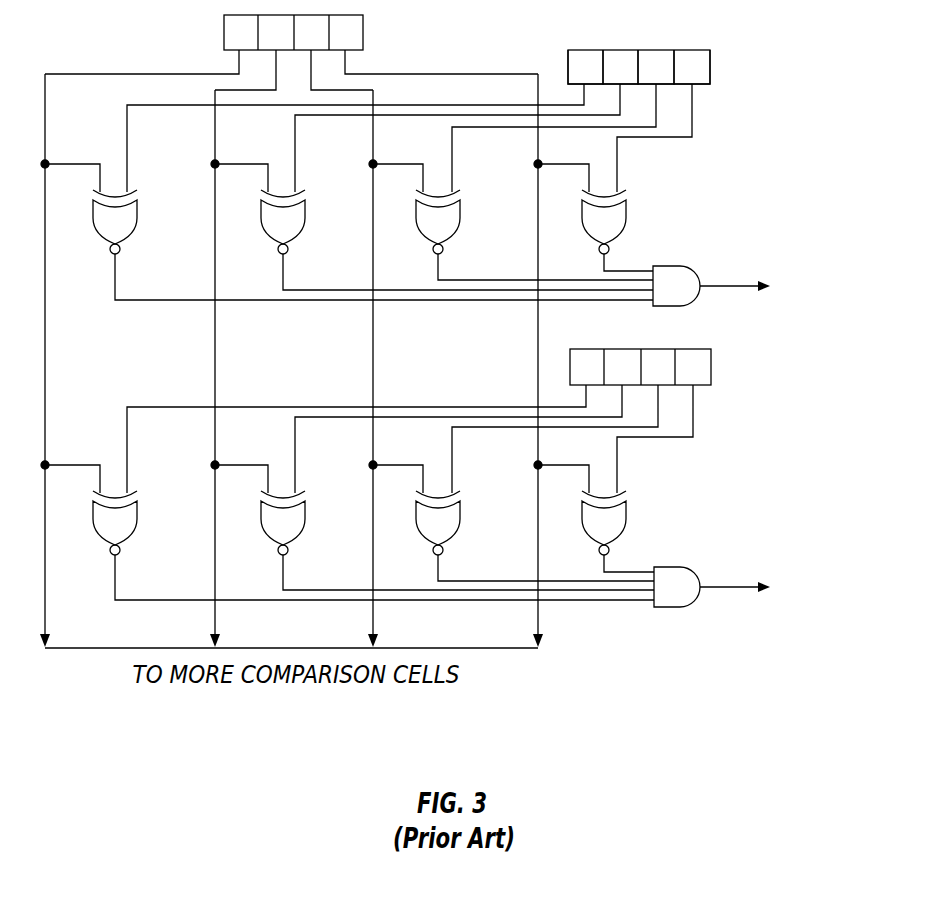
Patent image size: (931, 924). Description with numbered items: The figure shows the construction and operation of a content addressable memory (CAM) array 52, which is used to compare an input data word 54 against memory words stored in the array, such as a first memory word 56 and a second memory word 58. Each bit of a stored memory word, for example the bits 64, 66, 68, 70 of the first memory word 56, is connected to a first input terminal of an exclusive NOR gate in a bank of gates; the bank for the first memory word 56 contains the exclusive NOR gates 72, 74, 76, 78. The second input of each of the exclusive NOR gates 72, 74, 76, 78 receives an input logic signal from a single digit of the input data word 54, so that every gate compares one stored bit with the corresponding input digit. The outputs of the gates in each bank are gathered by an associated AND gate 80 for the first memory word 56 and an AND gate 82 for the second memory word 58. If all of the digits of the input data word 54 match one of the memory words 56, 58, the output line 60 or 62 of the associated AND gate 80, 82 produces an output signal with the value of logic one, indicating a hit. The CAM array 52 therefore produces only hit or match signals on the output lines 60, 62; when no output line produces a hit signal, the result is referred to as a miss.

The content addressable memory (CAM) array 52 is at (818, 139).
The input data word 54 is at (224, 33).
The first memory word 56 is at (710, 68).
The second memory word 58 is at (711, 370).
The output line 60 is at (719, 284).
The output line 62 is at (719, 585).
The bit 64 is at (583, 50).
The bit 66 is at (622, 50).
The bit 68 is at (655, 50).
The bit 70 is at (690, 50).
The exclusive NOR gate 72 is at (136, 206).
The exclusive NOR gate 74 is at (304, 206).
The exclusive NOR gate 76 is at (460, 206).
The exclusive NOR gate 78 is at (626, 206).
The AND gate 80 is at (660, 266).
The AND gate 82 is at (661, 567).